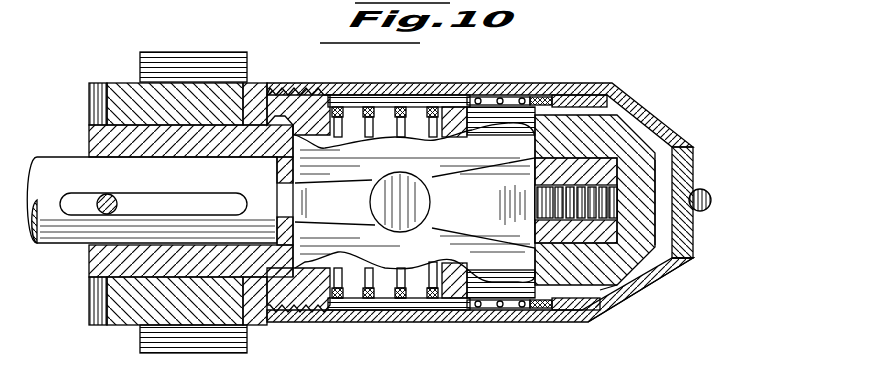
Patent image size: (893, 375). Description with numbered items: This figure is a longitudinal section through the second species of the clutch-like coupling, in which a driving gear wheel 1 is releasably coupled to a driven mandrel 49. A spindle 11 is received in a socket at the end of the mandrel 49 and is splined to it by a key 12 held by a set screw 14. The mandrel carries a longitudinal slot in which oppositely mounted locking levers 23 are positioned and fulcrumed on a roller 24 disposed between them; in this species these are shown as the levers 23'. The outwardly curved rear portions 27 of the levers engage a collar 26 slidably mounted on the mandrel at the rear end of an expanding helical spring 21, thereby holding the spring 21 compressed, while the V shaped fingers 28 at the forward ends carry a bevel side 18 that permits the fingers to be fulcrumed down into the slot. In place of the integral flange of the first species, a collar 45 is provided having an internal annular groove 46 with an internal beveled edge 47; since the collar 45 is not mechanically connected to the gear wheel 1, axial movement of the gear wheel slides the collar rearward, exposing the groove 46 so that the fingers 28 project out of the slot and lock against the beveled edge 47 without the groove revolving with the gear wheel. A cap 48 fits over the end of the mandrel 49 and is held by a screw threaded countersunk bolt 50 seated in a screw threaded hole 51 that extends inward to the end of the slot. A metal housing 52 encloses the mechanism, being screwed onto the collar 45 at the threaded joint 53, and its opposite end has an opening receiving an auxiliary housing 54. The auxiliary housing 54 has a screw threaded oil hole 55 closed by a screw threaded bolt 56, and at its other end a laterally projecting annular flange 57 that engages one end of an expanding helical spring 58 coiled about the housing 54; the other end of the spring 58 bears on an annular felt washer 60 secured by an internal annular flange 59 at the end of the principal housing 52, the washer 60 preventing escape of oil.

The gear wheel 1 is at (148, 340).
The spindle 11 is at (68, 170).
The key 12 is at (98, 208).
The set screw 14 is at (108, 213).
The bevel side 18 is at (375, 96).
The expanding helical spring 21 is at (437, 280).
The locking levers 23 is at (385, 306).
The levers 23' is at (396, 99).
The roller 24 is at (398, 230).
The collar 26 is at (452, 110).
The outwardly curved rear portions 27 is at (487, 112).
The V shaped fingers 28 is at (340, 106).
The collar 45 is at (410, 147).
The internal annular groove 46 is at (273, 115).
The internal beveled edge 47 is at (312, 100).
The cap 48 is at (600, 140).
The mandrel 49 is at (100, 257).
The screw threaded countersunk bolt 50 is at (645, 180).
The screw threaded hole 51 is at (605, 295).
The metal housing 52 is at (420, 290).
The screw connection 53 is at (337, 290).
The auxiliary housing 54 is at (650, 275).
The screw threaded hole 55 is at (695, 185).
The screw threaded bolt 56 is at (710, 200).
The laterally projecting annular flange 57 is at (500, 100).
The expanding helical spring 58 is at (540, 97).
The internal annular flange 59 is at (570, 87).
The annular felt washer 60 is at (578, 95).